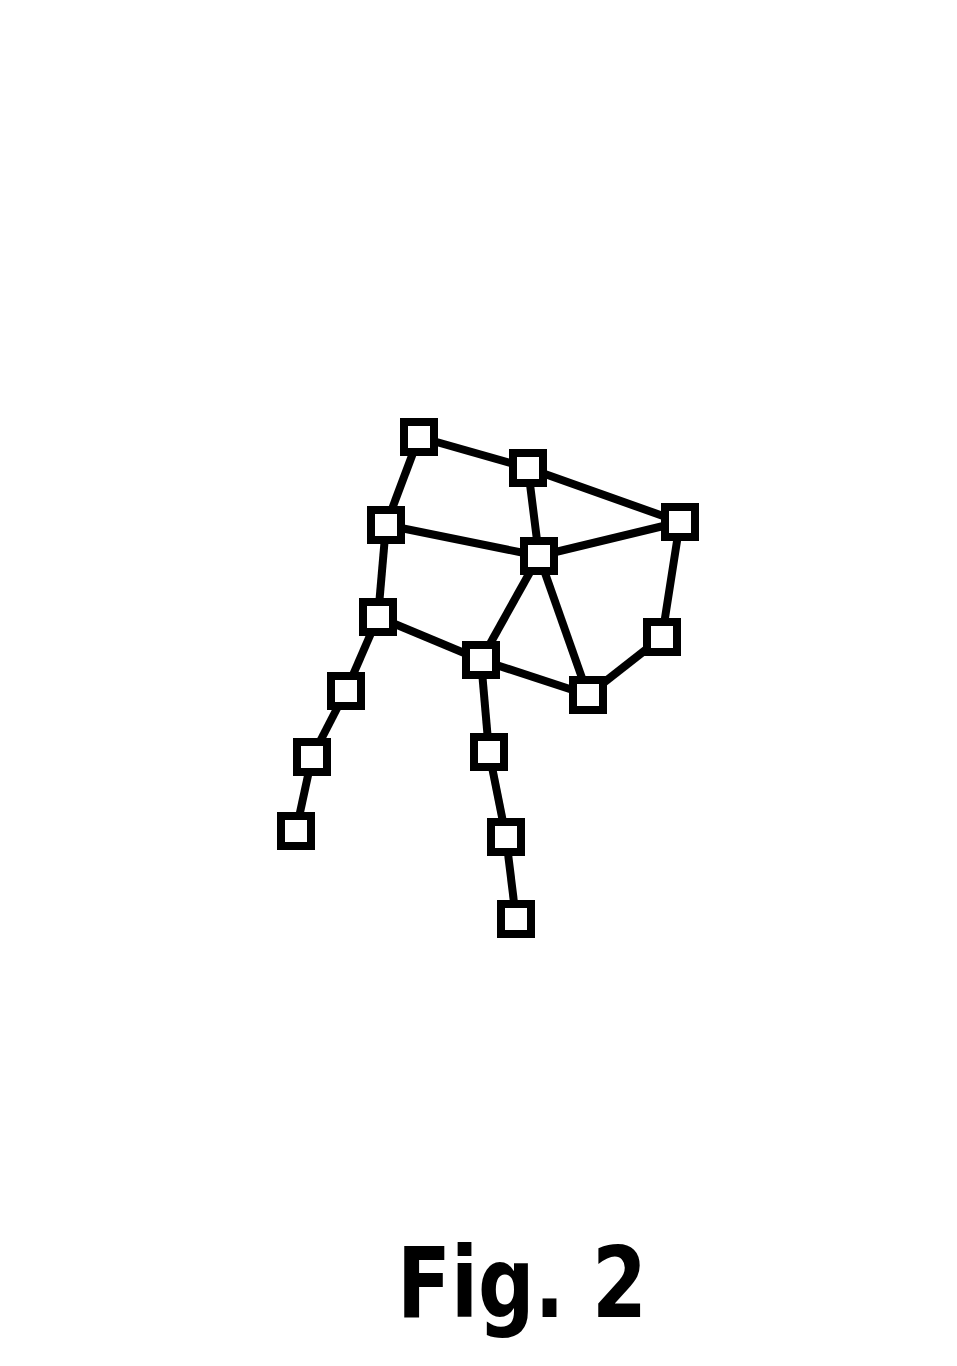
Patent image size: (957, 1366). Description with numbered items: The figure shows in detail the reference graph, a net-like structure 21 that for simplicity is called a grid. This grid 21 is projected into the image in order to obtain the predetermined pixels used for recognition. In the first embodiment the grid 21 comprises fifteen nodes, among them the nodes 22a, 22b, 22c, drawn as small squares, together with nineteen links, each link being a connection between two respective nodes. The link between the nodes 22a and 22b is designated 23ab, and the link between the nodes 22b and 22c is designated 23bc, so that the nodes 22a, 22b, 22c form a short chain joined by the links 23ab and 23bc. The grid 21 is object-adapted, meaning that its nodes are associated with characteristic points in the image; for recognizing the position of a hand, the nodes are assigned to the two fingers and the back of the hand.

The net-like structure 21 is at (317, 408).
The node 22a is at (547, 933).
The node 22b is at (547, 837).
The node 22c is at (530, 760).
The link 23ab is at (482, 885).
The link 23bc is at (482, 805).